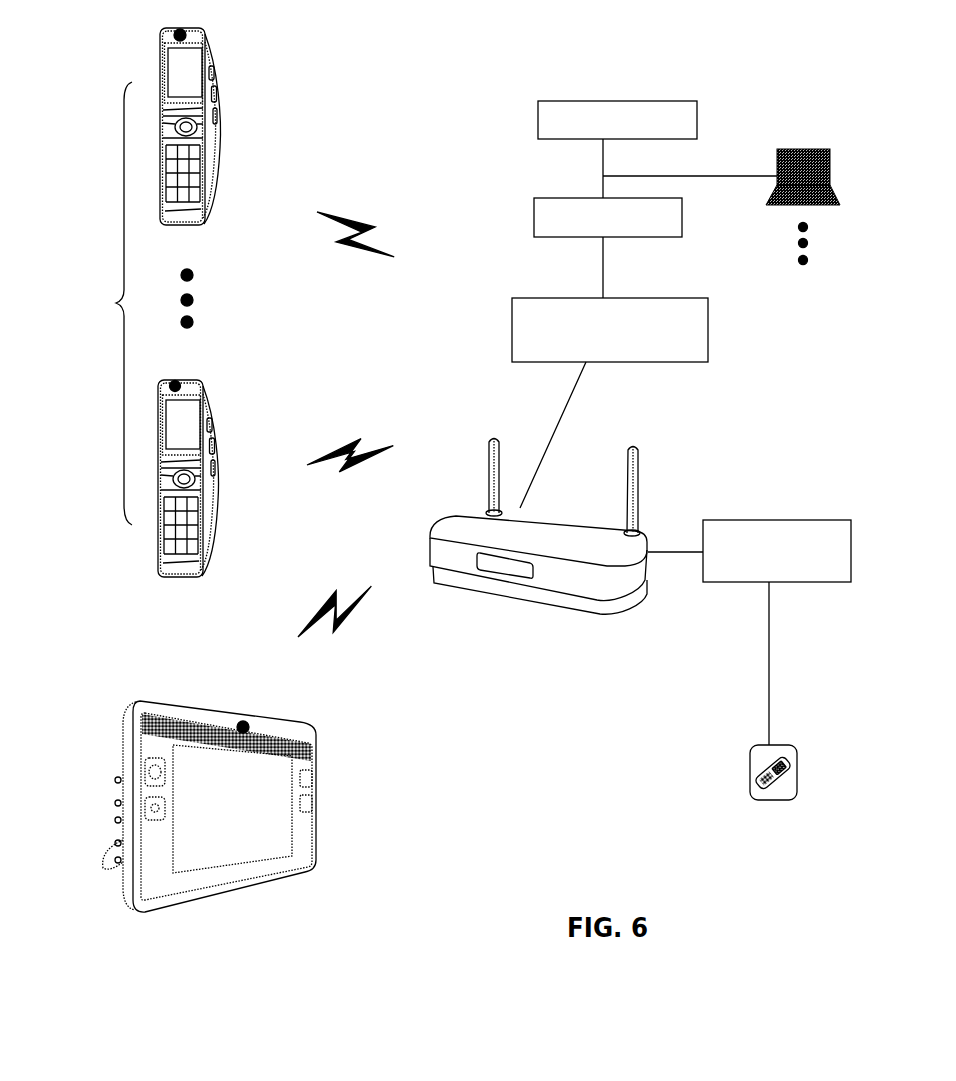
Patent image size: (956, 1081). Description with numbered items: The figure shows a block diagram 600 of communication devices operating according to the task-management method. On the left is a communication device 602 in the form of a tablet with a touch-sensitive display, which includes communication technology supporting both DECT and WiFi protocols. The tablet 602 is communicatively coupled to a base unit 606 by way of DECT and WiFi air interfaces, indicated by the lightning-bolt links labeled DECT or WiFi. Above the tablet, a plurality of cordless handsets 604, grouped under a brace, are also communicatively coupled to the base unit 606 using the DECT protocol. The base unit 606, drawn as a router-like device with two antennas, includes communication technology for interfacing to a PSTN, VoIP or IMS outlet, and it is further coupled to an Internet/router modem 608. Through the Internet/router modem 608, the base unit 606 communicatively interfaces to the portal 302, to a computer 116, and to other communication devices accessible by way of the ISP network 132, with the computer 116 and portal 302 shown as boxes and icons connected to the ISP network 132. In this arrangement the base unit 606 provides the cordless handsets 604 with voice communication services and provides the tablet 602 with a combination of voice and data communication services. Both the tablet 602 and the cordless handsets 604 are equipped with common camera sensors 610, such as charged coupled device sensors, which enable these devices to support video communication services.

The block diagram 600 is at (430, 522).
The communication device 602 is at (135, 698).
The cordless handsets 604 is at (212, 403).
The base unit 606 is at (598, 613).
The Internet/router modem 608 is at (693, 353).
The camera sensors 610 is at (177, 384).
The computer 116 is at (820, 148).
The ISP network 132 is at (666, 228).
The portal 302 is at (673, 132).